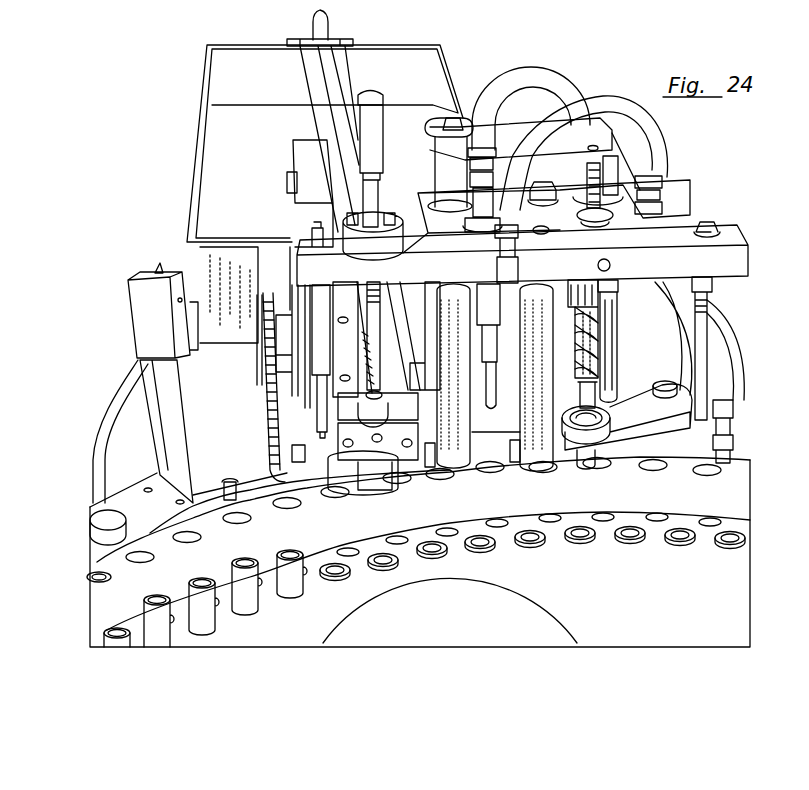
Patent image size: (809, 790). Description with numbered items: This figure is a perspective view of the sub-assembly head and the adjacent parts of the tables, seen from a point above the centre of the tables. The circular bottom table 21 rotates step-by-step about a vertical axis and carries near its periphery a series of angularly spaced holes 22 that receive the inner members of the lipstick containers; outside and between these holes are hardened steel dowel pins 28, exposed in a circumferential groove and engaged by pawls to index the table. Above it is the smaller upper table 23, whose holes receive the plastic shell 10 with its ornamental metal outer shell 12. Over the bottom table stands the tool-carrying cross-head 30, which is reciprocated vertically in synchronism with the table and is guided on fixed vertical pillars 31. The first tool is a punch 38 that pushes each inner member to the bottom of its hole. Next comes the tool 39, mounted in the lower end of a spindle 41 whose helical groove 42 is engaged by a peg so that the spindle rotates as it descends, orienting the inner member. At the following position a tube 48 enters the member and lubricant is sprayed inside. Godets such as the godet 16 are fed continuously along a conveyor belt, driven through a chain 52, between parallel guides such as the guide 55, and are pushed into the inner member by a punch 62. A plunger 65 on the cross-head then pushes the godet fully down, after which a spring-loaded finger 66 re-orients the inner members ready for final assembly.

The plastic shell 10 is at (333, 567).
The ornamental metal outer shell 12 is at (260, 573).
The godet 16 is at (384, 388).
The bottom table 21 is at (108, 623).
The holes 22 is at (88, 580).
The upper table 23 is at (727, 587).
The dowel pins 28 is at (707, 520).
The cross-head 30 is at (683, 256).
The pillars 31 is at (456, 425).
The punch 38 is at (703, 328).
The tool 39 is at (617, 400).
The spindle 41 is at (613, 360).
The helical groove 42 is at (584, 343).
The tube 48 is at (485, 388).
The chain 52 is at (265, 418).
The guide 55 is at (318, 117).
The punch 62 is at (370, 360).
The plunger 65 is at (318, 413).
The spring-loaded finger 66 is at (178, 522).